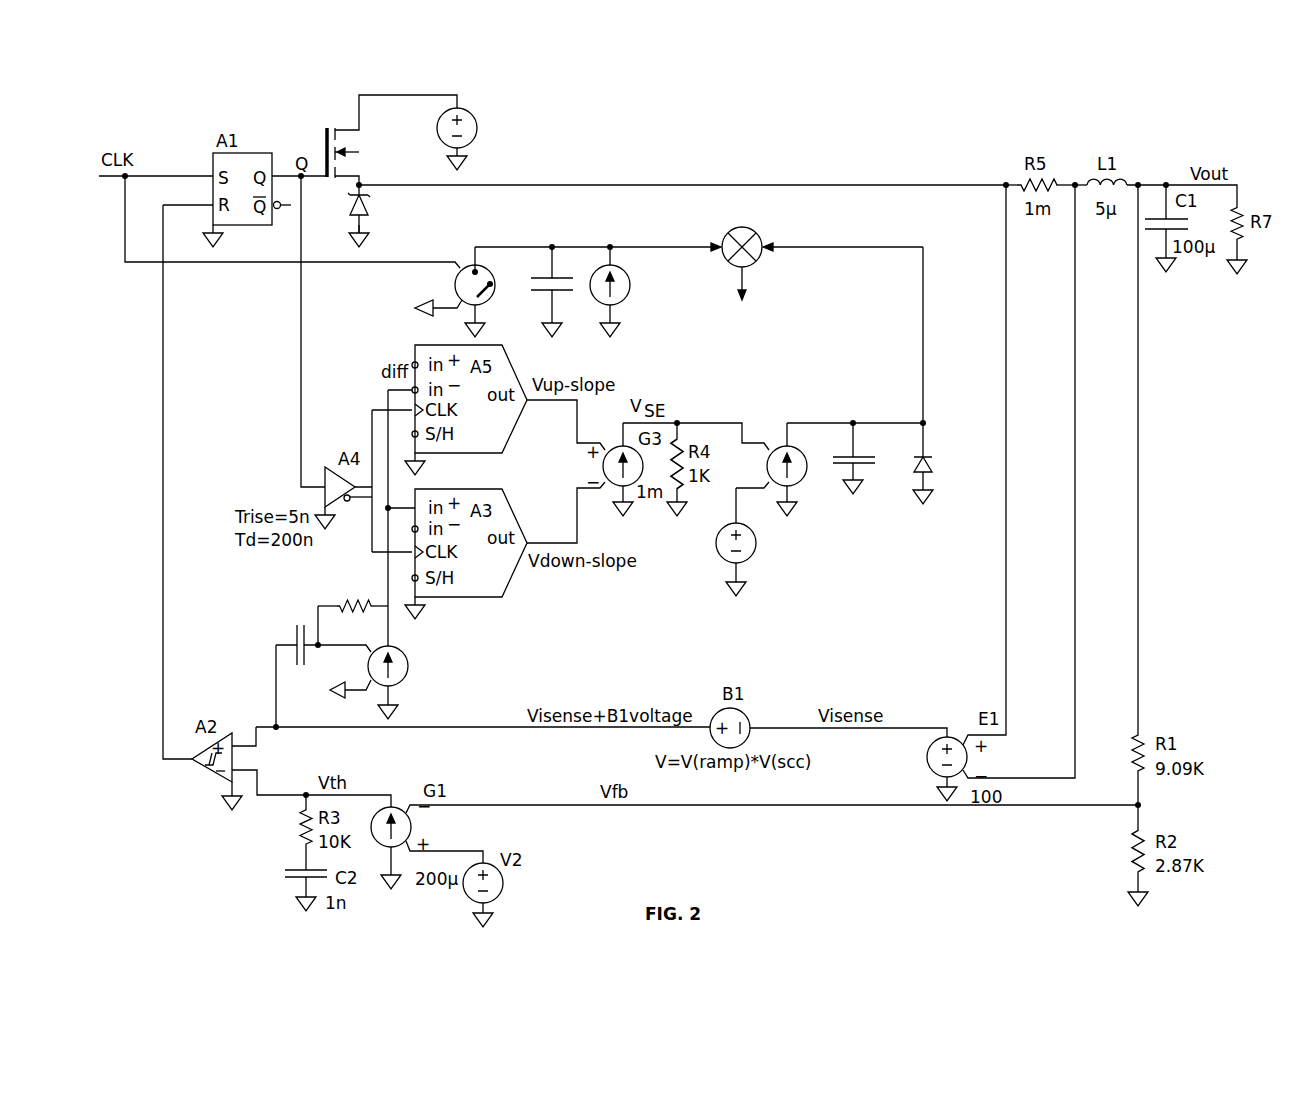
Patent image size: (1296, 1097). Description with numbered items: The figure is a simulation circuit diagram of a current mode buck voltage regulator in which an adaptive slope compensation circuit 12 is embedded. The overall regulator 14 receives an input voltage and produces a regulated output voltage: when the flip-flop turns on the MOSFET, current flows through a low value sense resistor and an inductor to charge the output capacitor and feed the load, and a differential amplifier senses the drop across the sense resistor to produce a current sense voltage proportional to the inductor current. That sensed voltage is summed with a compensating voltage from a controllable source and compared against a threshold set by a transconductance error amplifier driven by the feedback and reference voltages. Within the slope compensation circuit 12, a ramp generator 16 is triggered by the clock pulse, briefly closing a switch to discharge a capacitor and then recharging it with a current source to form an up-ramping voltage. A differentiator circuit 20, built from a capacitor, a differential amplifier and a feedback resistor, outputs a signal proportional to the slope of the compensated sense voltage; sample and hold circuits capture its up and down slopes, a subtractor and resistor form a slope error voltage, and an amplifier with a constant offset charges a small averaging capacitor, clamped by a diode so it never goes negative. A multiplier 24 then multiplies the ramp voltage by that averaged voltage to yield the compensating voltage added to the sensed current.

The overall regulator 14 is at (758, 157).
The ramp generator 16 is at (577, 232).
The multiplier 24 is at (751, 228).
The differentiator circuit 20 is at (473, 660).
The slope compensation circuit 12 is at (768, 612).